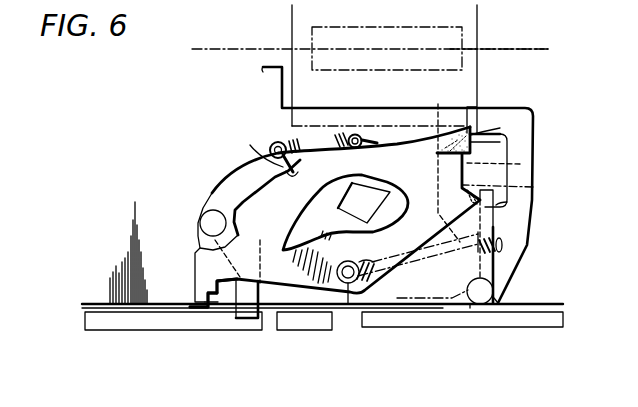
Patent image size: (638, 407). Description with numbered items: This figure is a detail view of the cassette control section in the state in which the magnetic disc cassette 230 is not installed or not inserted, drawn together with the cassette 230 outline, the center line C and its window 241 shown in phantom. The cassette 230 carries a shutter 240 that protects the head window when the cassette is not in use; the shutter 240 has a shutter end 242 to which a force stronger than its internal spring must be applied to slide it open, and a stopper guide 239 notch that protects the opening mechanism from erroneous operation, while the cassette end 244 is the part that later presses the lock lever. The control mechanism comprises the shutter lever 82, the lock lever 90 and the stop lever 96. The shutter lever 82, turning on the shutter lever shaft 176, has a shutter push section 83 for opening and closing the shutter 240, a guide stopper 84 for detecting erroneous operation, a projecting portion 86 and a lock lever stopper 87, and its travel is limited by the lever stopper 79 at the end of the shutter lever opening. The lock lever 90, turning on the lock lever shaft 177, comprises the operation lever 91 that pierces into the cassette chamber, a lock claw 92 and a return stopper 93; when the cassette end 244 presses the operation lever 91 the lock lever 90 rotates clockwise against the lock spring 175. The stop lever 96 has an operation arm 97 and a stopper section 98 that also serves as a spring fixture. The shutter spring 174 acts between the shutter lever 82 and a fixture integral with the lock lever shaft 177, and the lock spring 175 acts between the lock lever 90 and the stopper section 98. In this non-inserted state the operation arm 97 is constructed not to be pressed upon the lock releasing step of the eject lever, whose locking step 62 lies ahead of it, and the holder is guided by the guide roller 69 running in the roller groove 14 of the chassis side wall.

The cassette center line C is at (538, 47).
The roller groove 14 is at (344, 314).
The locking step 62 is at (224, 303).
The guide roller 69 is at (352, 333).
The lever stopper 79 is at (500, 128).
The shutter lever 82 is at (494, 280).
The shutter push section 83 is at (507, 137).
The guide stopper 84 is at (520, 164).
The projecting portion 86 is at (505, 210).
The lock lever stopper 87 is at (527, 240).
The lock lever 90 is at (322, 294).
The operation lever 91 is at (507, 202).
The lock claw 92 is at (217, 298).
The return stopper 93 is at (265, 173).
The stop lever 96 is at (200, 210).
The operation arm 97 is at (263, 320).
The stopper section 98 is at (268, 146).
The shutter spring 174 is at (504, 252).
The lock spring 175 is at (335, 138).
The shutter lever shaft 176 is at (500, 296).
The lock lever shaft 177 is at (356, 314).
The magnetic disc cassette 230 is at (472, 305).
The stopper guide 239 is at (443, 162).
The shutter 240 is at (478, 92).
The window 241 is at (463, 62).
The shutter end 242 is at (468, 107).
The cassette end 244 is at (533, 187).